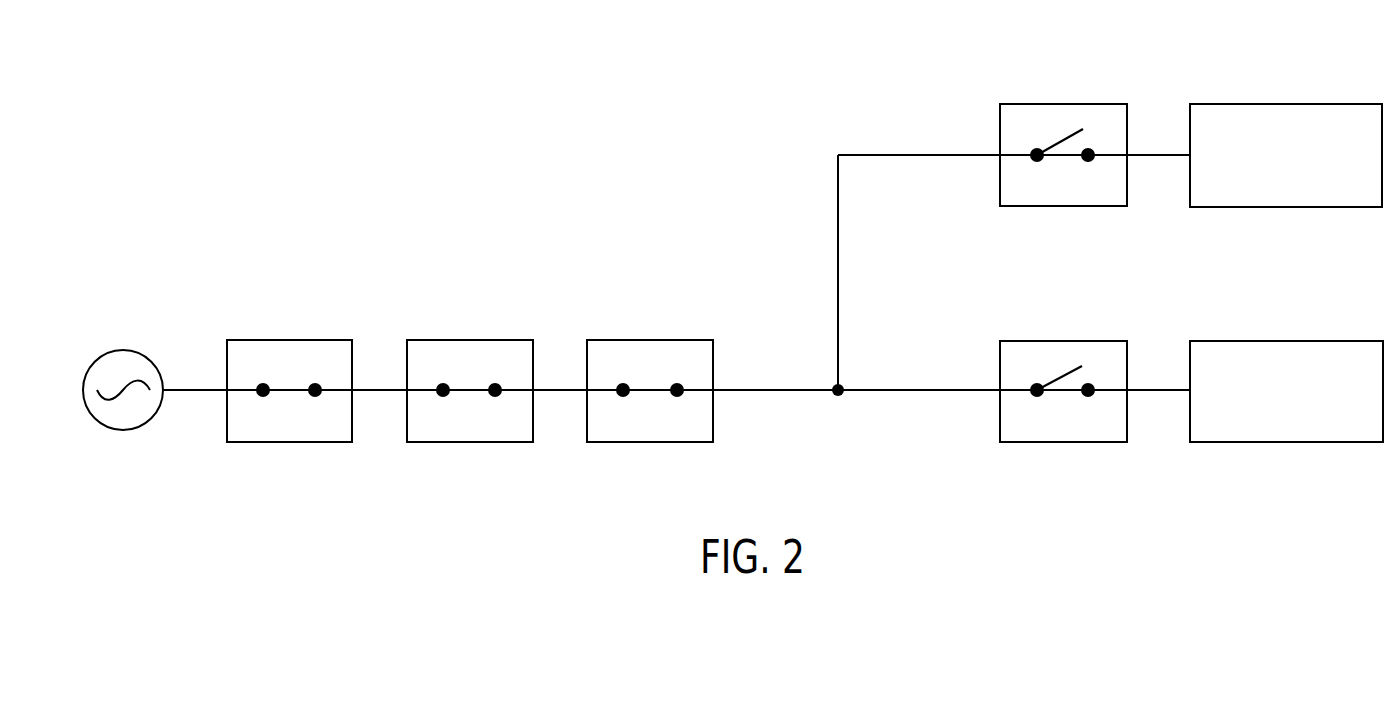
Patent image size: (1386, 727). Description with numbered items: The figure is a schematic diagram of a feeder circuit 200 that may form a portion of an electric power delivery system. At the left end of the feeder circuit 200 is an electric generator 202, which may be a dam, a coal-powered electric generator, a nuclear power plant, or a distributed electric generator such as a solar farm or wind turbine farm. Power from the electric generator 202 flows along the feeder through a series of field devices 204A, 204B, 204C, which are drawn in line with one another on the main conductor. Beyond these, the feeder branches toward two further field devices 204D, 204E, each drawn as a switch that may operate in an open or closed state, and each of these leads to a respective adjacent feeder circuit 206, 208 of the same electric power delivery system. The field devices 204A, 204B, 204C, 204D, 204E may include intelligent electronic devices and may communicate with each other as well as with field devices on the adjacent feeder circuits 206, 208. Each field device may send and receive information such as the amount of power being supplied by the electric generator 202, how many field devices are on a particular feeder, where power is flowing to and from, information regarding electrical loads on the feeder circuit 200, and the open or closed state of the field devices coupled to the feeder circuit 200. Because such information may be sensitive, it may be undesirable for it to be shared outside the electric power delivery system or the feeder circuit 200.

The feeder circuit 200 is at (518, 77).
The electric generator 202 is at (123, 350).
The field device 204A is at (290, 340).
The field device 204B is at (468, 340).
The field device 204C is at (650, 340).
The field device 204D is at (1062, 104).
The field device 204E is at (1063, 341).
The adjacent feeder circuit 206 is at (1287, 104).
The adjacent feeder circuit 208 is at (1273, 341).